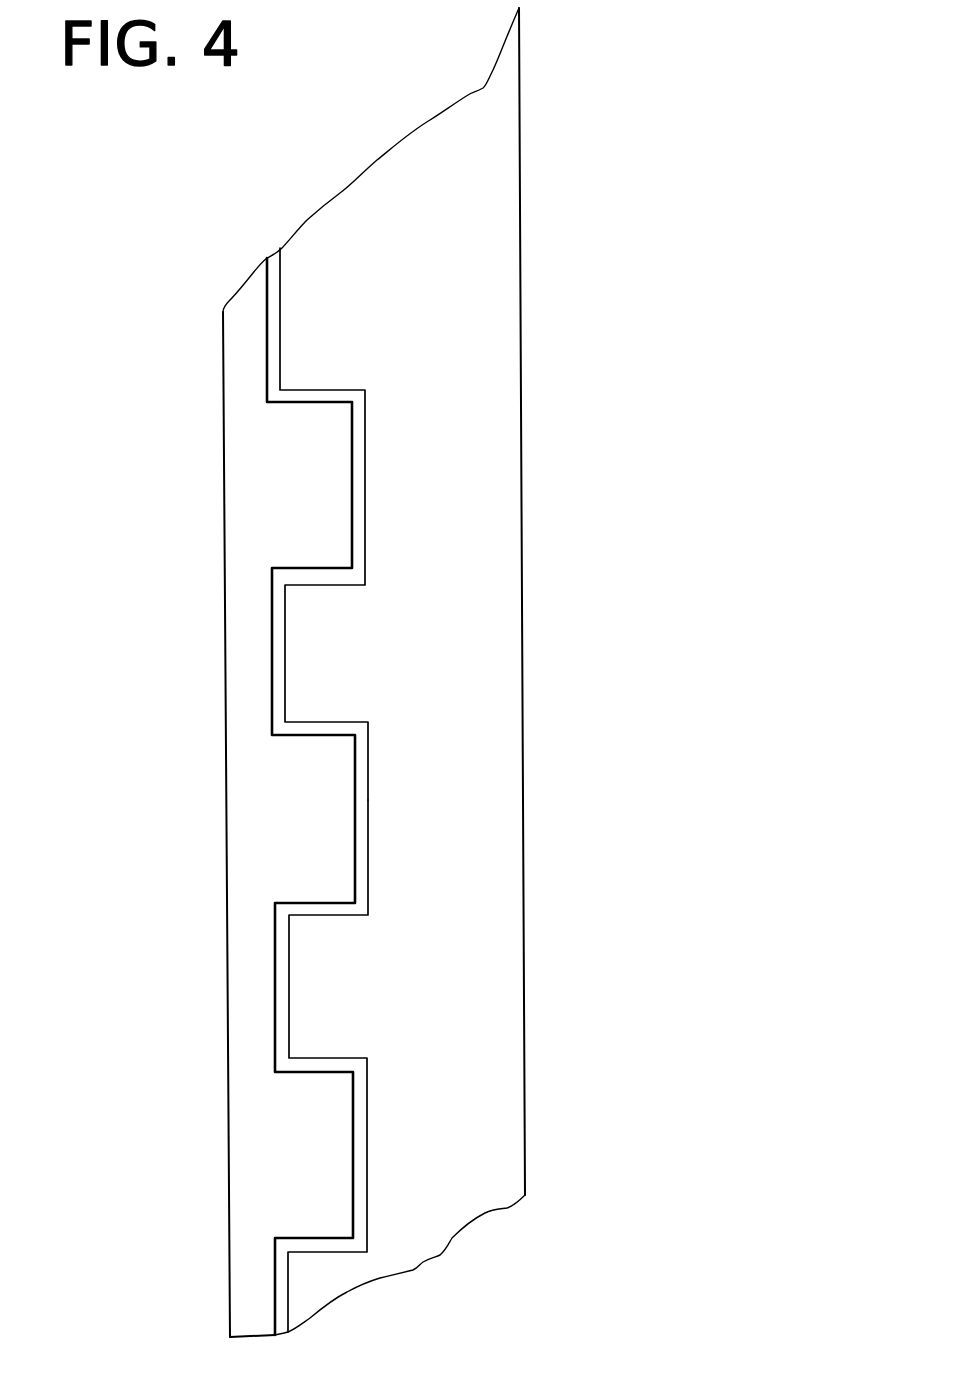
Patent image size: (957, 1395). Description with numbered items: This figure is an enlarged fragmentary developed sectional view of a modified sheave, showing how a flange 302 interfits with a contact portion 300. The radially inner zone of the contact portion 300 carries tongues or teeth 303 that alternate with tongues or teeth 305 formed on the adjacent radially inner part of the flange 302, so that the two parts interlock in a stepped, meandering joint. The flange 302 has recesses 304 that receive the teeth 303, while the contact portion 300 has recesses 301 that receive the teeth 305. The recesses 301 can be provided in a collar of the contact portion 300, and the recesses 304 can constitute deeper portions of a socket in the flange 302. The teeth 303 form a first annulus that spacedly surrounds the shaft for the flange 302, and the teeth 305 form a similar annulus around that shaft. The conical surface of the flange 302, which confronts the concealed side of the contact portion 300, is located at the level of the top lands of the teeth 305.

The contact portion 300 is at (248, 357).
The recesses 301 is at (252, 644).
The flange 302 is at (492, 228).
The teeth 303 is at (338, 475).
The recesses 304 is at (360, 510).
The teeth 305 is at (279, 685).